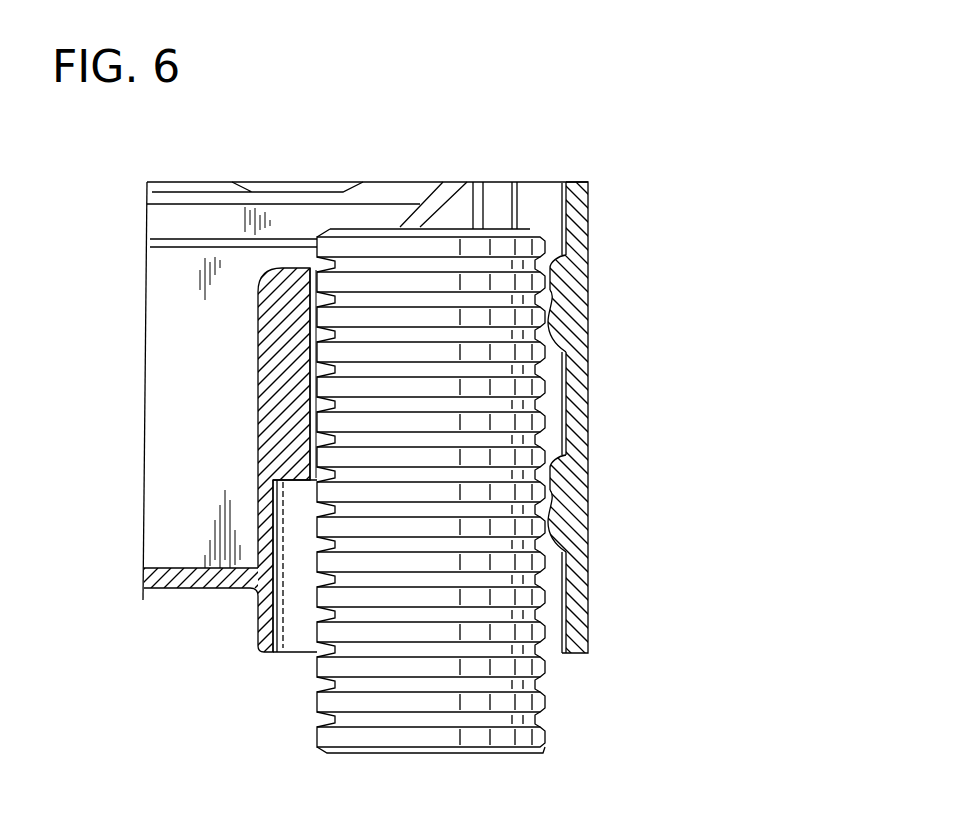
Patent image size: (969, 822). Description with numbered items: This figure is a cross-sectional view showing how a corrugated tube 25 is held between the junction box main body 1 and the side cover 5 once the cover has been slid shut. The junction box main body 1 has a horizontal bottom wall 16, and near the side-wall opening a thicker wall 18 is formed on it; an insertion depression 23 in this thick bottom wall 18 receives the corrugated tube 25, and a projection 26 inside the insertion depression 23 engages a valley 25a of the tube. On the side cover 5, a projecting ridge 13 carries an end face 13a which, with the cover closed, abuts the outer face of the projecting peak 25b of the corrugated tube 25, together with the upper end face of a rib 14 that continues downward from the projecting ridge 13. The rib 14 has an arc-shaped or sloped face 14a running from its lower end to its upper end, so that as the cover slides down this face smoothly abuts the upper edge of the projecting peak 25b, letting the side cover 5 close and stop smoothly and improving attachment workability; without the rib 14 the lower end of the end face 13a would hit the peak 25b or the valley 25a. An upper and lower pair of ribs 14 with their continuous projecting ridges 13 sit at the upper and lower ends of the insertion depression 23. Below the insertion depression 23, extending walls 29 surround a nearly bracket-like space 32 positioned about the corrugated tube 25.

The junction box main body 1 is at (168, 610).
The side cover 5 is at (587, 223).
The projecting ridge 13 is at (563, 254).
The end face 13a is at (532, 235).
The rib 14 is at (560, 297).
The arc-shaped face or sloped face 14a is at (577, 352).
The bottom wall 16 is at (190, 567).
The thicker wall 18 is at (293, 268).
The insertion depression 23 is at (316, 398).
The corrugated tube 25 is at (505, 750).
The valley 25a is at (363, 370).
The projecting peak 25b is at (478, 282).
The projection 26 is at (318, 362).
The extending walls 29 is at (280, 617).
The bracket-like space 32 is at (293, 577).